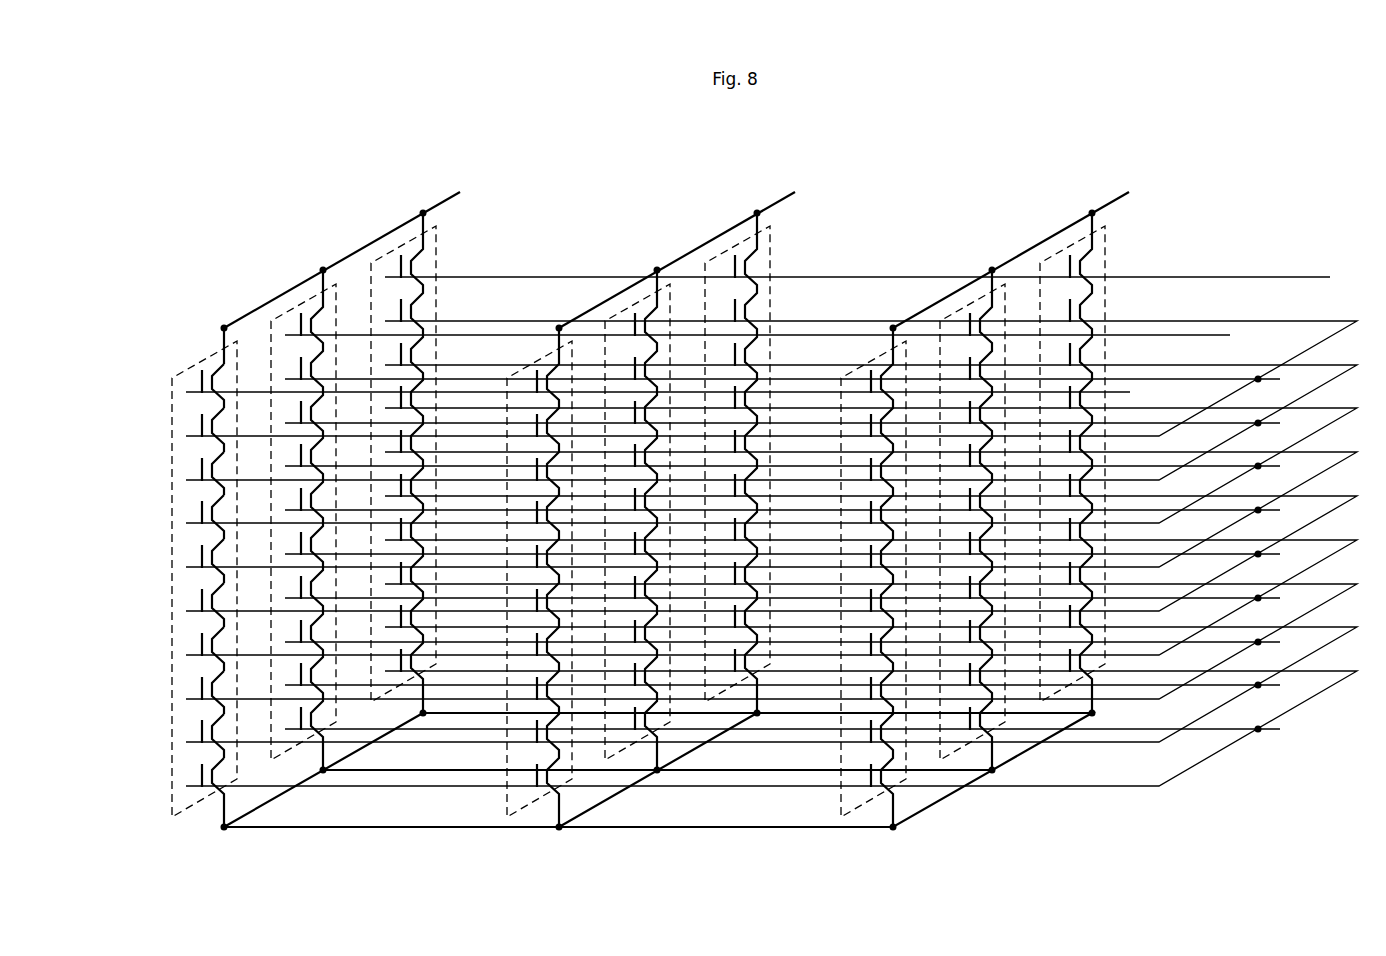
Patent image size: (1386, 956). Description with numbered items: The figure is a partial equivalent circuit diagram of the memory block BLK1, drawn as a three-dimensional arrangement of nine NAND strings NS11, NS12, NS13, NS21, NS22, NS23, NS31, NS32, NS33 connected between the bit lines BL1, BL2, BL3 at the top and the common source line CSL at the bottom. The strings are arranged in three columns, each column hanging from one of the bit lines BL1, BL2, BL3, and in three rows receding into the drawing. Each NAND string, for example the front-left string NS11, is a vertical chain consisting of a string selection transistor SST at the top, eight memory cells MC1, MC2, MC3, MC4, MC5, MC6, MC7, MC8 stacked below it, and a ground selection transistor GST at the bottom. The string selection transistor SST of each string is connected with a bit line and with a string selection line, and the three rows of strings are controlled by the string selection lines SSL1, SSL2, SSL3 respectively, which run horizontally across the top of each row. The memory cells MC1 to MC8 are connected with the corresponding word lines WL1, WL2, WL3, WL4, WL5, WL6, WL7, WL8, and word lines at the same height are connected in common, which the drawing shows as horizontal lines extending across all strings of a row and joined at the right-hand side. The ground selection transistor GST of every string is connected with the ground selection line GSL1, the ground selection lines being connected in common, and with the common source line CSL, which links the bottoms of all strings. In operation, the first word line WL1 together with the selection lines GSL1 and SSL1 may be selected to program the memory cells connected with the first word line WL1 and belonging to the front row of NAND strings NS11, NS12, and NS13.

The memory block BLK1 is at (1284, 189).
The NAND string NS11 is at (201, 361).
The NAND string NS12 is at (536, 361).
The NAND string NS13 is at (870, 361).
The NAND string NS21 is at (300, 304).
The NAND string NS22 is at (634, 304).
The NAND string NS23 is at (969, 304).
The NAND string NS31 is at (400, 247).
The NAND string NS32 is at (734, 247).
The NAND string NS33 is at (1069, 247).
The bit line BL1 is at (353, 251).
The bit line BL2 is at (688, 251).
The bit line BL3 is at (1022, 251).
The string selection line SSL1 is at (681, 392).
The string selection line SSL2 is at (781, 335).
The string selection line SSL3 is at (881, 277).
The first word line WL1 is at (771, 684).
The word line WL2 is at (771, 641).
The word line WL3 is at (771, 597).
The word line WL4 is at (771, 553).
The word line WL5 is at (771, 509).
The word line WL6 is at (771, 465).
The word line WL7 is at (771, 422).
The word line WL8 is at (771, 378).
The ground selection line GSL1 is at (771, 728).
The common source line CSL is at (658, 770).
The string selection transistor SST is at (196, 380).
The ground selection transistor GST is at (196, 774).
The memory cell MC1 is at (196, 730).
The memory cell MC2 is at (196, 687).
The memory cell MC3 is at (196, 643).
The memory cell MC4 is at (196, 599).
The memory cell MC5 is at (196, 555).
The memory cell MC6 is at (196, 511).
The memory cell MC7 is at (196, 468).
The memory cell MC8 is at (196, 424).